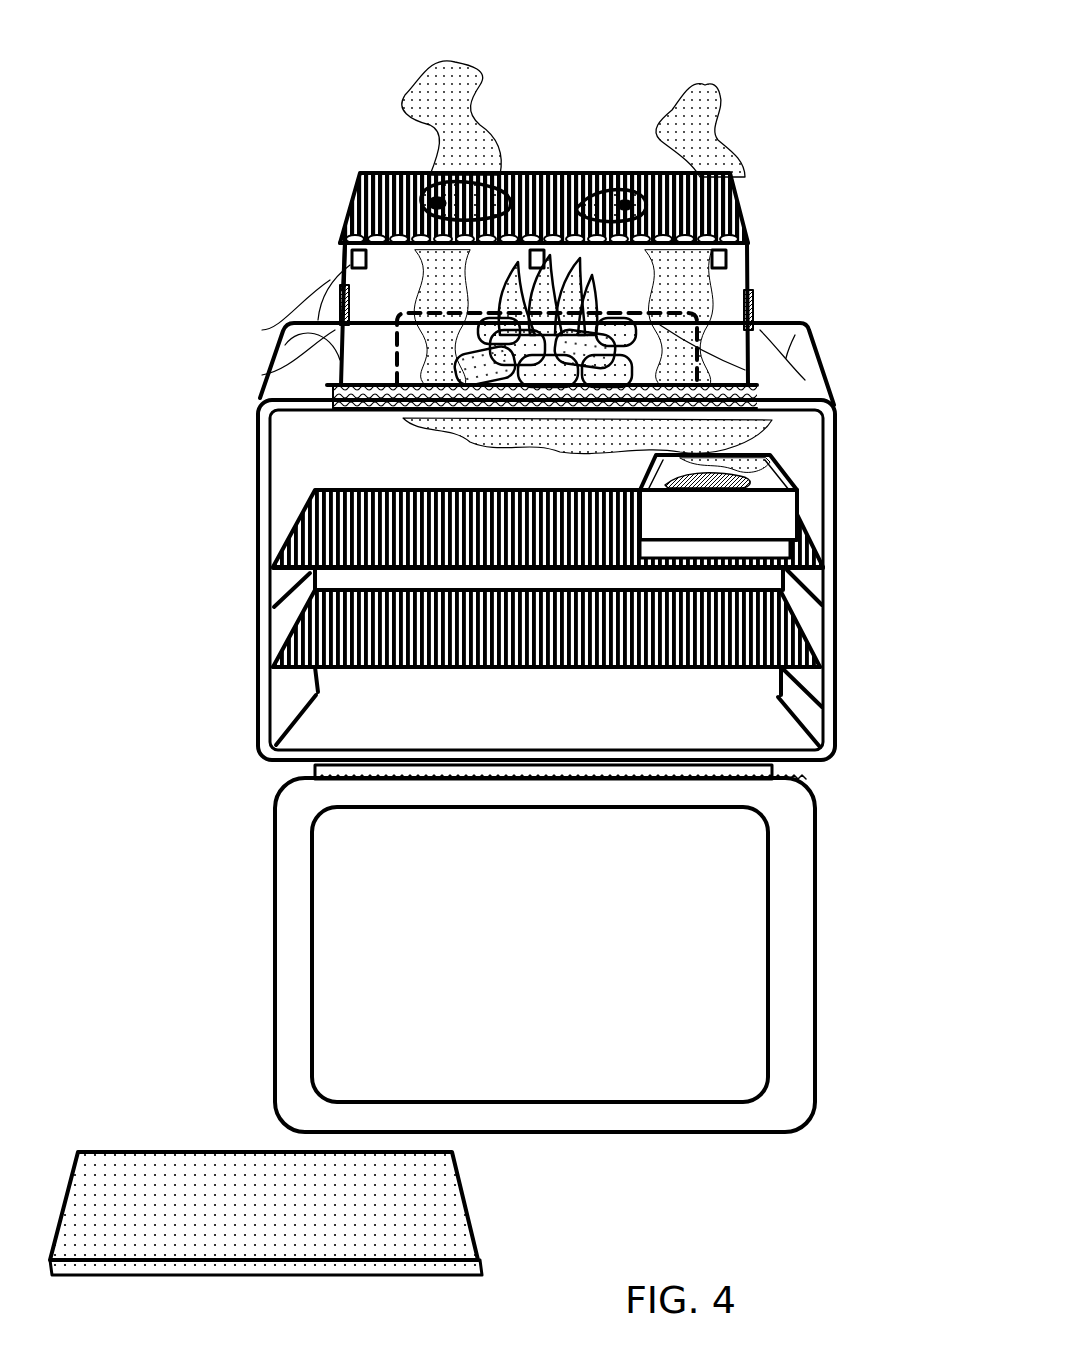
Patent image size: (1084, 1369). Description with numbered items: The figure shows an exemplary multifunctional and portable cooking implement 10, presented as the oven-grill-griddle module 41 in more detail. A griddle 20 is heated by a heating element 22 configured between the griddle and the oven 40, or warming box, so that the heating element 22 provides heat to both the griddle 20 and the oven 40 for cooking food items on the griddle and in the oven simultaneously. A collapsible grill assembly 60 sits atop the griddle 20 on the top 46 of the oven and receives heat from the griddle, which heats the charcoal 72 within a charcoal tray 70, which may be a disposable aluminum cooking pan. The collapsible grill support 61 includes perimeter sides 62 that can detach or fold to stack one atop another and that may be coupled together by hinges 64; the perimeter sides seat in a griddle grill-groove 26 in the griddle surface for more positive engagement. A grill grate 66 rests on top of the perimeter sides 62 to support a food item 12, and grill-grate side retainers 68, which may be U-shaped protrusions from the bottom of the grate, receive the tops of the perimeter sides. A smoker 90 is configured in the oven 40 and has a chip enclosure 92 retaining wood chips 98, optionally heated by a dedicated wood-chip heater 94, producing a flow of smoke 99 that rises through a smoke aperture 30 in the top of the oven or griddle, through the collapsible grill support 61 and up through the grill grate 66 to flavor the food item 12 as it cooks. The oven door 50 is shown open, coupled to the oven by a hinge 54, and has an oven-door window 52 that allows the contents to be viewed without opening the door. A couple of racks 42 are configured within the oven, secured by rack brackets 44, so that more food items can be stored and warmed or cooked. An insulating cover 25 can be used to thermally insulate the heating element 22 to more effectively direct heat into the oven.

The multifunctional and portable cooking implement 10 is at (240, 136).
The food item 12 is at (627, 175).
The griddle 20 is at (795, 378).
The heating element 22 is at (805, 403).
The insulating cover 25 is at (447, 1240).
The griddle grill-groove 26 is at (338, 323).
The smoke aperture 30 is at (347, 382).
The oven 40 is at (290, 452).
The oven-grill-griddle module 41 is at (795, 610).
The rack 42 is at (365, 515).
The rack bracket 44 is at (275, 657).
The top of the oven 46 is at (788, 352).
The oven door 50 is at (474, 955).
The oven-door window 52 is at (335, 933).
The hinge 54 is at (370, 778).
The collapsible grill assembly 60 is at (345, 300).
The collapsible grill support 61 is at (603, 178).
The perimeter sides 62 is at (343, 287).
The hinge 64 is at (752, 300).
The grill grate 66 is at (742, 197).
The grill-grate side retainer 68 is at (343, 260).
The charcoal tray 70 is at (748, 283).
The charcoal 72 is at (380, 290).
The smoker 90 is at (789, 489).
The chip enclosure 92 is at (760, 457).
The wood-chip heater 94 is at (773, 552).
The wood chips 98 is at (773, 482).
The smoke 99 is at (462, 92).